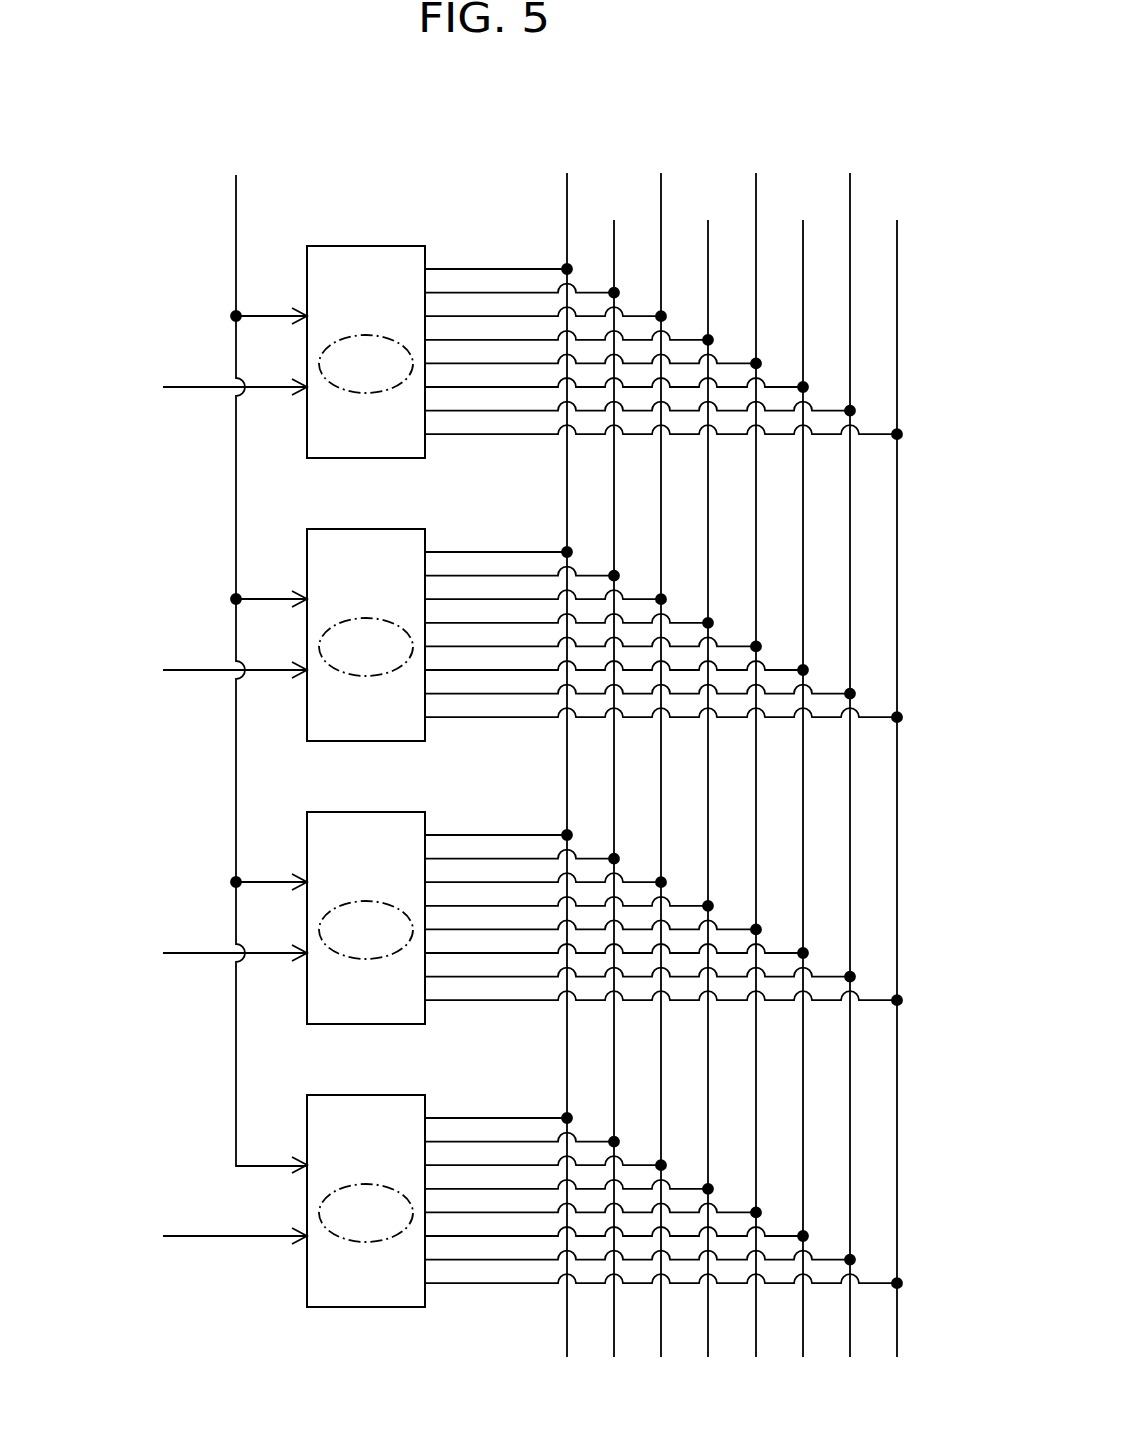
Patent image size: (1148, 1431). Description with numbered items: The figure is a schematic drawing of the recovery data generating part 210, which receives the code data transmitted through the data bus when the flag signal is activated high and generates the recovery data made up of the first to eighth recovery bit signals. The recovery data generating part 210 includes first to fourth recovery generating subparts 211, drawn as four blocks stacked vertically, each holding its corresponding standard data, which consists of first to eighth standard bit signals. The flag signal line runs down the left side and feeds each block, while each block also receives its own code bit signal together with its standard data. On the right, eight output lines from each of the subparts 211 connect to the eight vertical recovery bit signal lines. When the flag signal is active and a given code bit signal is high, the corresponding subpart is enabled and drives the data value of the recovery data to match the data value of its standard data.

The recovery data generating part 210 is at (426, 158).
The recovery generating subparts 211 is at (532, 750).